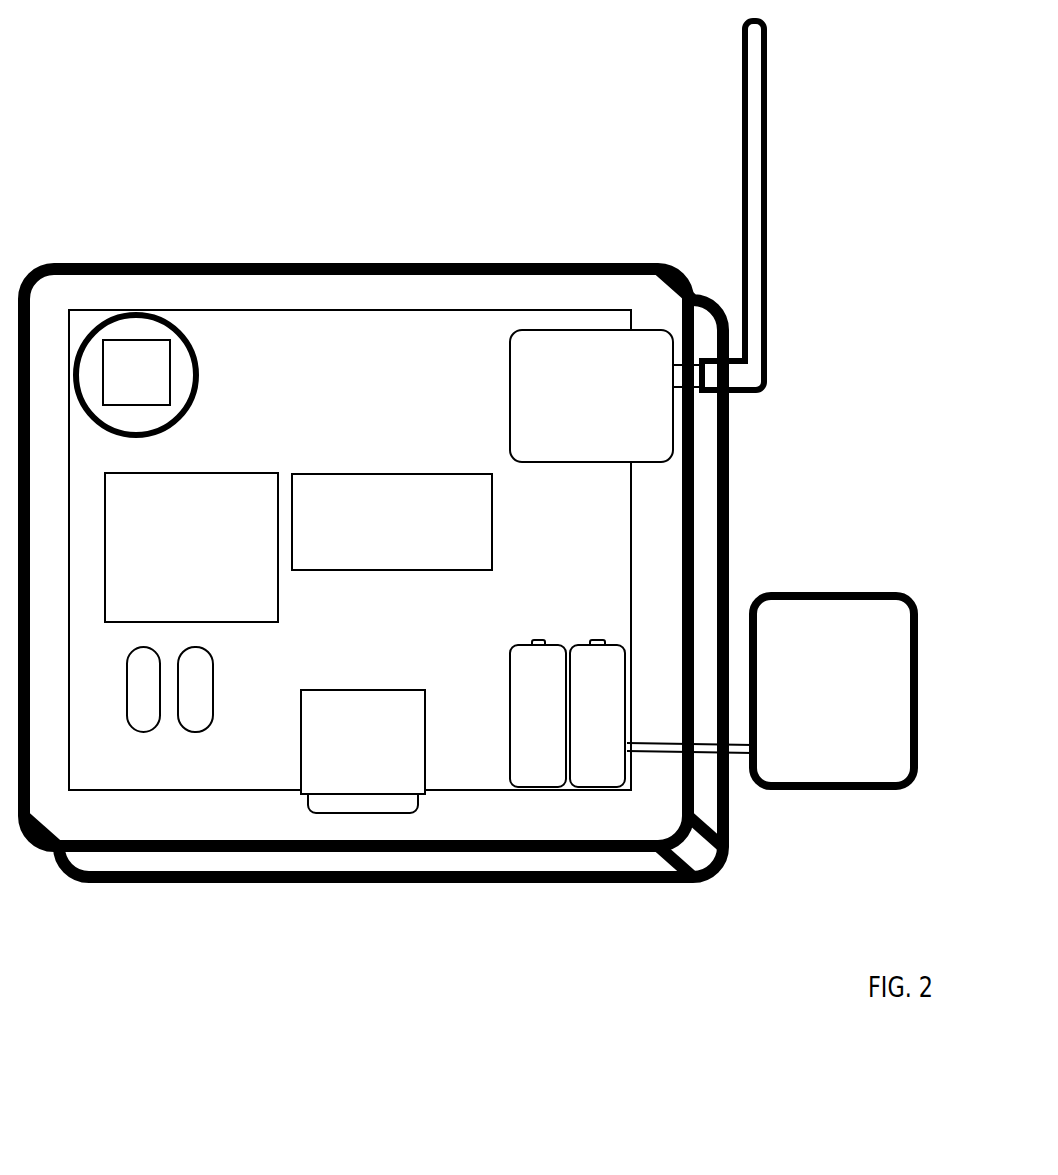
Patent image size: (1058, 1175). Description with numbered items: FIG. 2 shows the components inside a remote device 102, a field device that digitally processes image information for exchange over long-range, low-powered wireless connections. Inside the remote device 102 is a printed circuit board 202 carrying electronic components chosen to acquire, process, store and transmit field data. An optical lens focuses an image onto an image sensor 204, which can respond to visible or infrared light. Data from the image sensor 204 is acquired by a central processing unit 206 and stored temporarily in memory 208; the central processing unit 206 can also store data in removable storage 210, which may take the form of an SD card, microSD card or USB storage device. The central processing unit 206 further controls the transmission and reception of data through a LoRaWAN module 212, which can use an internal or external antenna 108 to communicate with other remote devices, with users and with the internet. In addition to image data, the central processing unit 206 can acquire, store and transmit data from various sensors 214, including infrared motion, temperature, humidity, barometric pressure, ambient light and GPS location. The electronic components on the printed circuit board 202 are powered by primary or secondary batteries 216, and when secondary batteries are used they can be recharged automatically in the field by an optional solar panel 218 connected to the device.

The remote device 102 is at (197, 393).
The antenna 108 is at (768, 275).
The printed circuit board 202 is at (217, 795).
The image sensor 204 is at (155, 407).
The central processing unit 206 is at (278, 622).
The memory 208 is at (403, 573).
The removable storage 210 is at (427, 732).
The LoRaWAN module 212 is at (568, 463).
The sensors 214 is at (215, 713).
The batteries 216 is at (508, 655).
The solar panel 218 is at (853, 787).